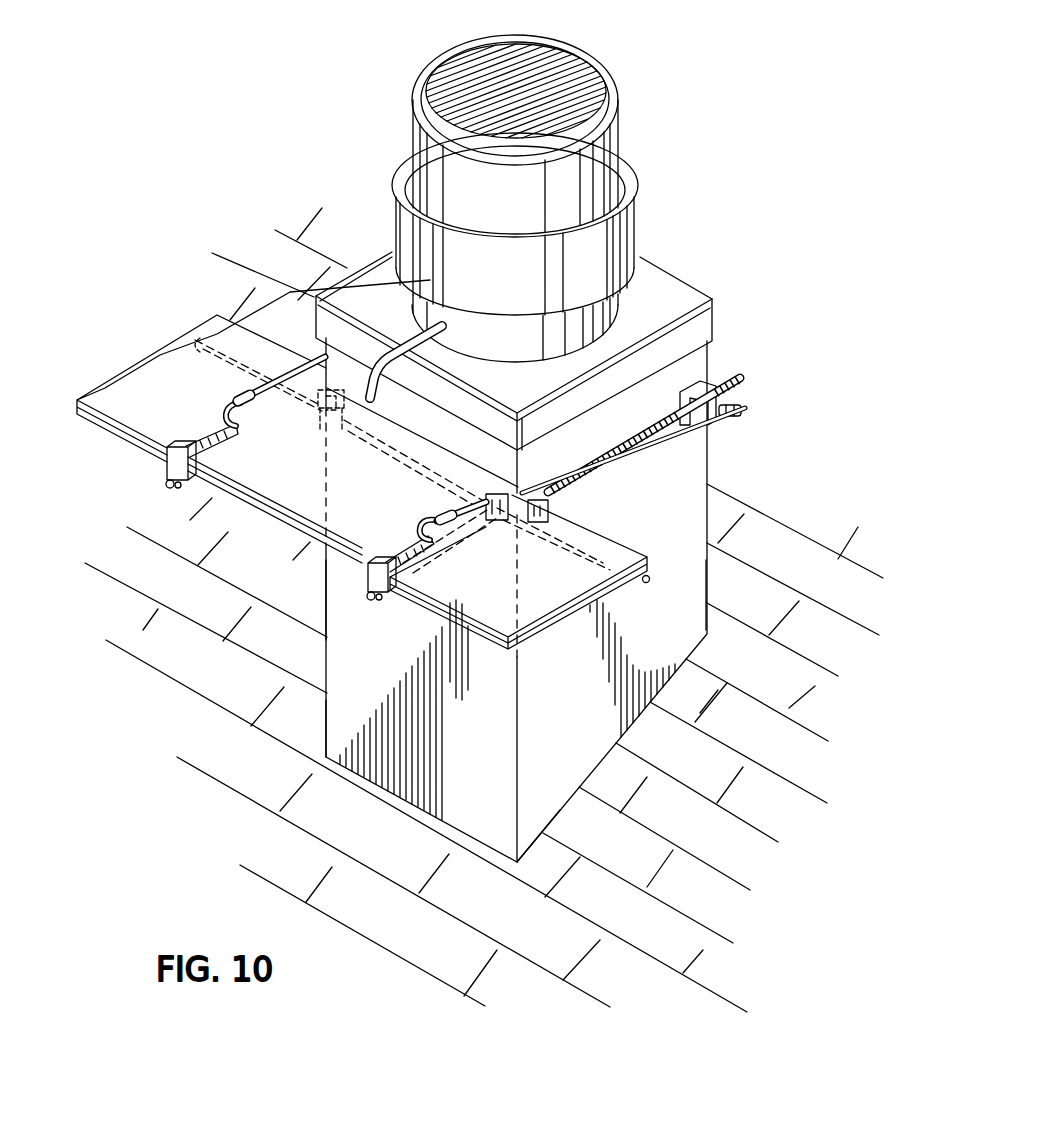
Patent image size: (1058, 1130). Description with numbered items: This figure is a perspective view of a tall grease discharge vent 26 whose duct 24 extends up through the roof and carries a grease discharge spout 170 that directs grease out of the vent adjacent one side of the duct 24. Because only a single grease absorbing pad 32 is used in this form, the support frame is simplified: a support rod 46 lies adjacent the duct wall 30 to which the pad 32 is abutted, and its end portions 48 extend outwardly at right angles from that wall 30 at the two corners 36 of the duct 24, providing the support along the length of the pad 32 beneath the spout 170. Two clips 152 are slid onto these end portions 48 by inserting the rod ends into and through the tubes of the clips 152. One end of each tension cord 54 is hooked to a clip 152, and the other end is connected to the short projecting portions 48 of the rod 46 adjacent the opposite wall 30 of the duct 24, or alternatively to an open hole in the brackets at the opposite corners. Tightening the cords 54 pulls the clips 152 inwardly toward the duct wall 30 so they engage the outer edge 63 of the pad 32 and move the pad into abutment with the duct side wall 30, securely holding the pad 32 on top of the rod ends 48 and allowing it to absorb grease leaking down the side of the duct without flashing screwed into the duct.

The duct 24 is at (680, 481).
The grease discharge vent 26 is at (386, 216).
The wall 30 is at (345, 626).
The grease absorbing pad 32 is at (120, 388).
The corner 36 is at (326, 672).
The support rod 46 is at (680, 407).
The end portion 48 is at (250, 360).
The tension cord 54 is at (557, 470).
The outer edge 63 is at (262, 513).
The clip 152 is at (178, 433).
The spout 170 is at (386, 355).